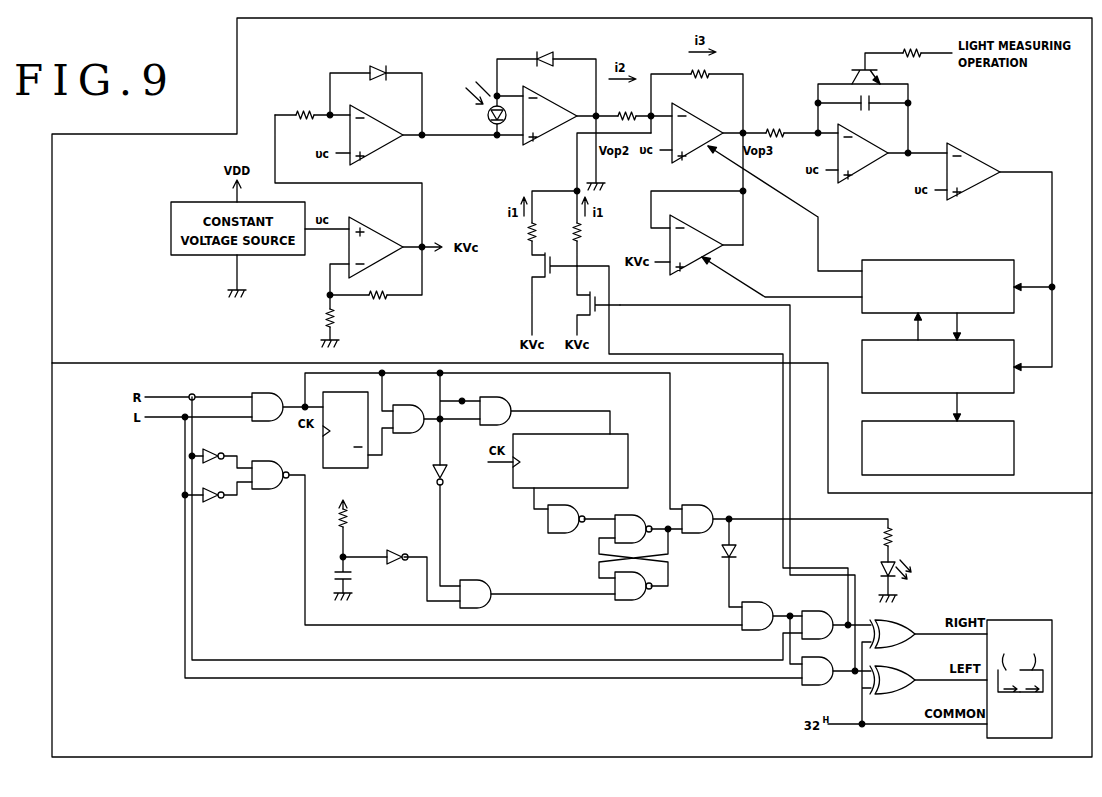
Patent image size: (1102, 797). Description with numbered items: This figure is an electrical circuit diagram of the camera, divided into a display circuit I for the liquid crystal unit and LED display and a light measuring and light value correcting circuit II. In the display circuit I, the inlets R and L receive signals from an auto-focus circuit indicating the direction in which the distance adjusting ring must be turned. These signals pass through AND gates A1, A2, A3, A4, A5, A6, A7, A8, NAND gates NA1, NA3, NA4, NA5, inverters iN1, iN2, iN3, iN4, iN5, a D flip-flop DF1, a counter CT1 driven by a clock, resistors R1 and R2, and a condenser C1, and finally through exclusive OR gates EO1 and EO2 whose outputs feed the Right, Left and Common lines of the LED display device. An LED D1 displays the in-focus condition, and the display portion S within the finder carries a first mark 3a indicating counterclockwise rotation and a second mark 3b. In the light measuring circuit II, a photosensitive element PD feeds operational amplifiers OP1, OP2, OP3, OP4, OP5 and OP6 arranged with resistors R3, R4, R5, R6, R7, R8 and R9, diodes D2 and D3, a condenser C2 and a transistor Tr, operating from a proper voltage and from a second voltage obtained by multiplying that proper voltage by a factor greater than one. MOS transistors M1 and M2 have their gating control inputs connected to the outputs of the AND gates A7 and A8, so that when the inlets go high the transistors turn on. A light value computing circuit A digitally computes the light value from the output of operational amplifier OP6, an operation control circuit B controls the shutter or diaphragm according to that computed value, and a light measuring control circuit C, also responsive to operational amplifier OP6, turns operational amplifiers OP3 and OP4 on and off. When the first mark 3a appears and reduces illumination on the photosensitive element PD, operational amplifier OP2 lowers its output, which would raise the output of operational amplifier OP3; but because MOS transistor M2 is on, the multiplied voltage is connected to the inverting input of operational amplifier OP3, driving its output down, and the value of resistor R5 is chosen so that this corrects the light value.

The light measuring and light value correcting circuit II is at (52, 236).
The display circuit I is at (52, 461).
The operational amplifier OP1 is at (376, 135).
The operational amplifier OP2 is at (550, 115).
The operational amplifier OP3 is at (697, 133).
The operational amplifier OP4 is at (696, 245).
The operational amplifier OP5 is at (863, 153).
The operational amplifier OP6 is at (973, 171).
The resistor R1 is at (335, 519).
The resistor R2 is at (896, 535).
The resistor R3 is at (305, 110).
The resistor R4 is at (540, 226).
The resistor R5 is at (583, 236).
The resistor R6 is at (623, 112).
The resistor R7 is at (708, 80).
The resistor R8 is at (776, 127).
The resistor R9 is at (910, 46).
The condenser C1 is at (353, 578).
The condenser C2 is at (872, 110).
The LED D1 is at (878, 563).
The diode D2 is at (378, 66).
The diode D3 is at (541, 52).
The photosensitive element PD is at (486, 115).
The transistor Tr is at (860, 68).
The MOS transistor M1 is at (541, 267).
The MOS transistor M2 is at (582, 303).
The light measuring control circuit C is at (986, 259).
The light value computing circuit A is at (1006, 339).
The operation control circuit B is at (1006, 420).
The AND gate A1 is at (264, 393).
The AND gate A2 is at (405, 405).
The AND gate A3 is at (501, 397).
The AND gate A4 is at (473, 580).
The AND gate A5 is at (698, 505).
The AND gate A6 is at (752, 602).
The AND gate A7 is at (813, 611).
The AND gate A8 is at (814, 657).
The NAND gate NA1 is at (268, 461).
The NAND gate NA3 is at (636, 515).
The NAND gate NA4 is at (640, 599).
The NAND gate NA5 is at (582, 507).
The inverter iN1 is at (208, 449).
The inverter iN2 is at (209, 503).
The inverter iN3 is at (430, 472).
The inverter iN4 is at (394, 550).
The inverter iN5 is at (737, 551).
The D flip-flop DF1 is at (352, 468).
The counter CT1 is at (628, 434).
The exclusive OR gate EO1 is at (888, 621).
The exclusive OR gate EO2 is at (888, 667).
The display portion S is at (1019, 663).
The first mark 3a is at (1008, 666).
The second mark 3b is at (1031, 666).